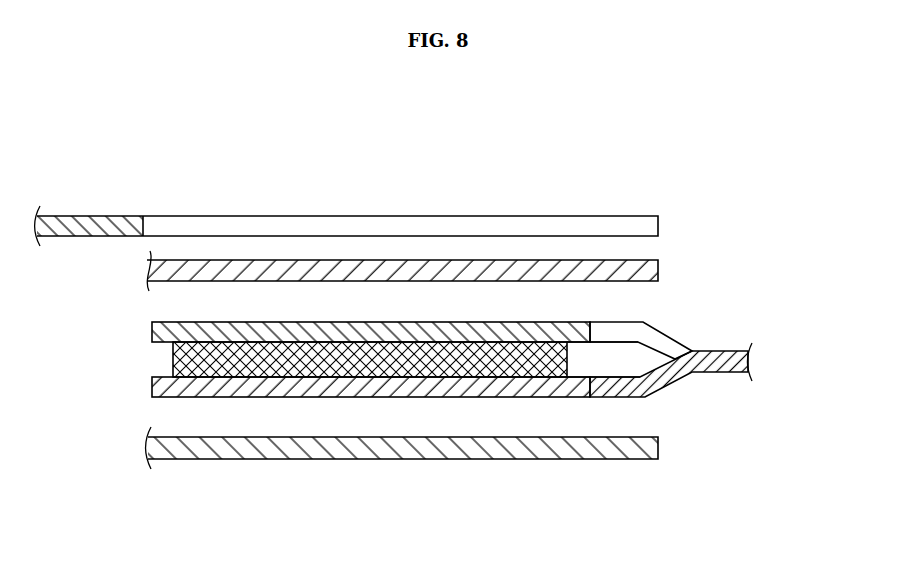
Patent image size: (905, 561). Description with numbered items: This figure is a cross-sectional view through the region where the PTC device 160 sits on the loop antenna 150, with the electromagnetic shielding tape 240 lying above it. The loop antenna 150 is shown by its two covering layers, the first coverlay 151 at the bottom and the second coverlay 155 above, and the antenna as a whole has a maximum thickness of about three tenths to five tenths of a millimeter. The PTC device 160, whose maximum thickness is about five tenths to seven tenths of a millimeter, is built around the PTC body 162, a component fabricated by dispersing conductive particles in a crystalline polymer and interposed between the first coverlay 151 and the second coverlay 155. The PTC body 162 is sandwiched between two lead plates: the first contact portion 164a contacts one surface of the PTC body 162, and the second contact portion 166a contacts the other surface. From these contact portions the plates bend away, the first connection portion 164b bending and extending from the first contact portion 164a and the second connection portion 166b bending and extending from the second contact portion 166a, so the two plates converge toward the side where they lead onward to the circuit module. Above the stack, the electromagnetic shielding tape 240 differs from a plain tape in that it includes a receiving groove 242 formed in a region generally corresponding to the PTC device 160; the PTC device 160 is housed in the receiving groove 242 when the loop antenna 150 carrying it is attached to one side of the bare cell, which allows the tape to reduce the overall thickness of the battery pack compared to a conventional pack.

The loop antenna 150 is at (402, 488).
The first coverlay 151 is at (213, 450).
The second coverlay 155 is at (283, 268).
The PTC device 160 is at (453, 355).
The PTC body 162 is at (183, 357).
The first contact portion 164a is at (190, 392).
The first connection portion 164b is at (674, 382).
The second contact portion 166a is at (188, 326).
The second connection portion 166b is at (658, 337).
The electromagnetic shielding tape 240 is at (346, 192).
The receiving groove 242 is at (397, 226).